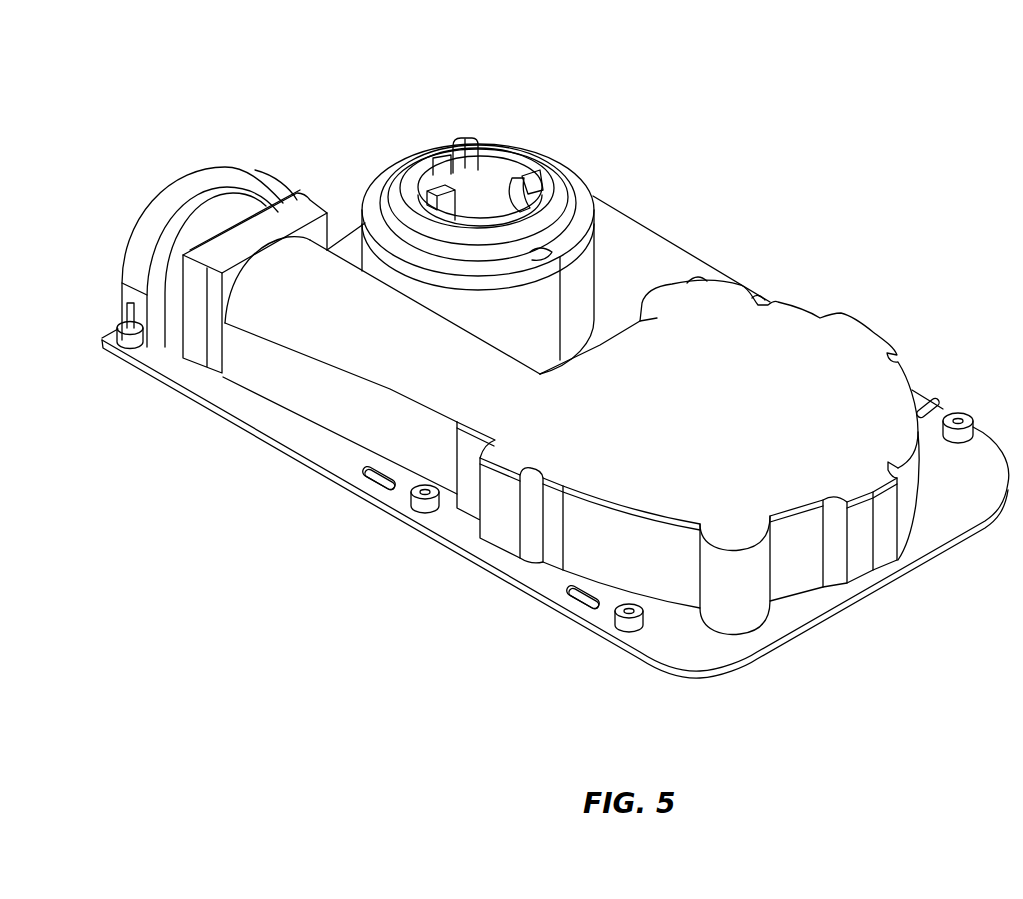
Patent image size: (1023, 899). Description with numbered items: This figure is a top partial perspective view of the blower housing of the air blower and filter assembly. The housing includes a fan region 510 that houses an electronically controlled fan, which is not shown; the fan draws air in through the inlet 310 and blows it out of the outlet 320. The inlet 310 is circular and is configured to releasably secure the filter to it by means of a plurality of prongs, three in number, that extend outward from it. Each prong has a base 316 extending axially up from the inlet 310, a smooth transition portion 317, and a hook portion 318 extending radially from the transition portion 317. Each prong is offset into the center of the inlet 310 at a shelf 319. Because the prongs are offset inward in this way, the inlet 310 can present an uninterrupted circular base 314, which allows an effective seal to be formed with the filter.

The inlet 310 is at (512, 148).
The uninterrupted circular base 314 is at (413, 167).
The base 316 is at (505, 190).
The smooth transition portion 317 is at (458, 152).
The hook portion 318 is at (461, 142).
The shelf 319 is at (538, 197).
The outlet 320 is at (147, 212).
The fan region 510 is at (630, 247).